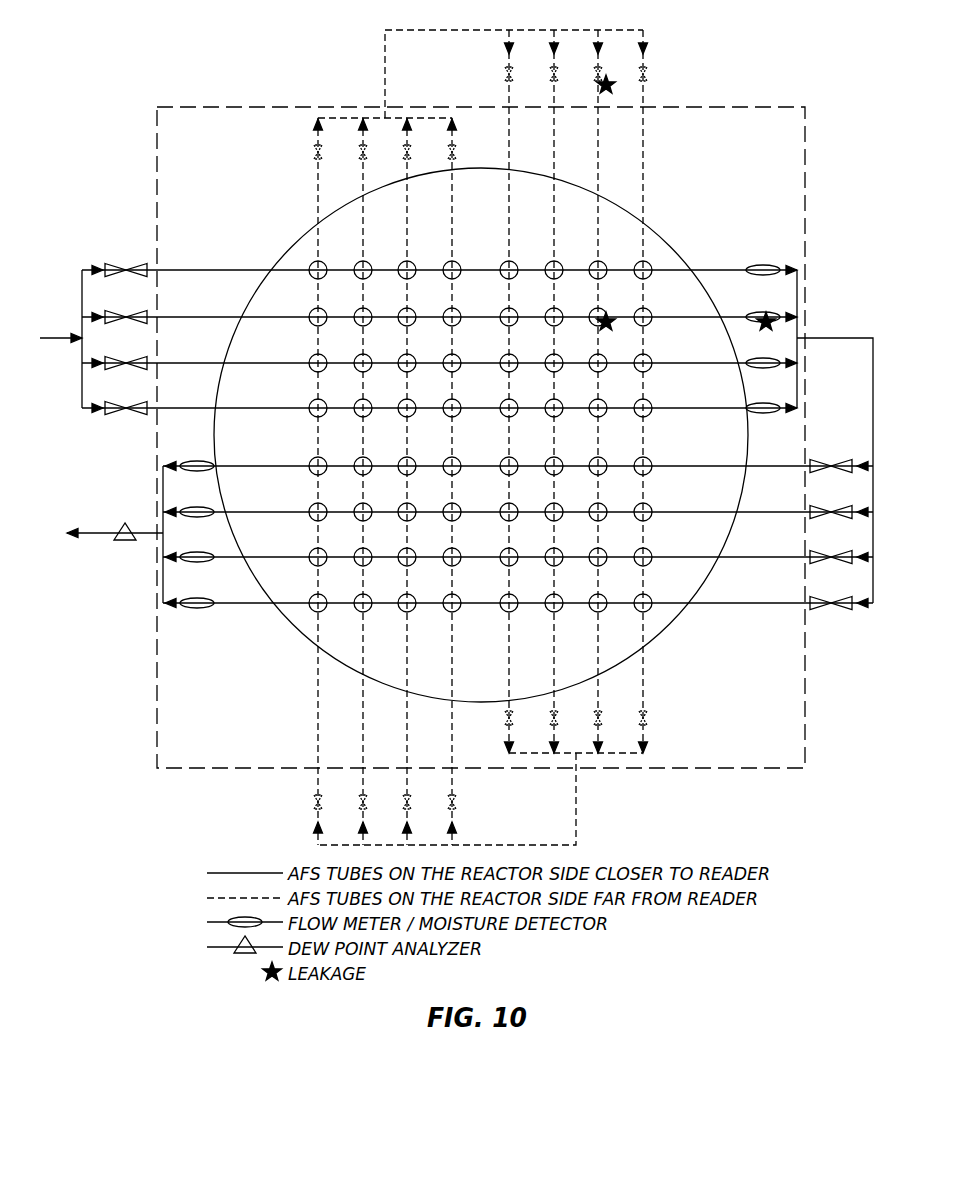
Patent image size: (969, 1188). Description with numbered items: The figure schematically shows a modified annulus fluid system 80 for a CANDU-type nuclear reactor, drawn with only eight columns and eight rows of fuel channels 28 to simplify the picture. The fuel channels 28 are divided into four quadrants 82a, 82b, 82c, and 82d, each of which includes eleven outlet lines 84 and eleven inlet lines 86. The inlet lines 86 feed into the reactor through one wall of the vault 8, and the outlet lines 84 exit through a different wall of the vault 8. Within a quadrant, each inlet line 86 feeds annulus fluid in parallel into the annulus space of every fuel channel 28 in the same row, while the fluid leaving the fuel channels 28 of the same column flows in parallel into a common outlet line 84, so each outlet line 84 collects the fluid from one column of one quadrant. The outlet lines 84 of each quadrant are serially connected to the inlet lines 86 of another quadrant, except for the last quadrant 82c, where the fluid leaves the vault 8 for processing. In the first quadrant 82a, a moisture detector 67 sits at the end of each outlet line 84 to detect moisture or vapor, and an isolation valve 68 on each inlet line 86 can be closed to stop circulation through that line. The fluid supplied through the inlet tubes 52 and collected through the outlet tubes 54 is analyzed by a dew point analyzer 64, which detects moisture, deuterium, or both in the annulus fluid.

The modified annulus fluid system 80 is at (158, 67).
The calandria vault 8 is at (735, 770).
The outlet tubes 54 is at (353, 108).
The inlet tubes 52 is at (80, 303).
The isolation valve 68 is at (140, 263).
The moisture detector 67 is at (320, 172).
The dew point analyzer 64 is at (123, 542).
The outlet line 84 is at (458, 245).
The inlet line 86 is at (301, 414).
The first quadrant 82a is at (308, 264).
The second quadrant 82b is at (655, 262).
The third quadrant 82c is at (299, 617).
The fourth quadrant 82d is at (652, 615).
The fuel channel 28 is at (655, 560).